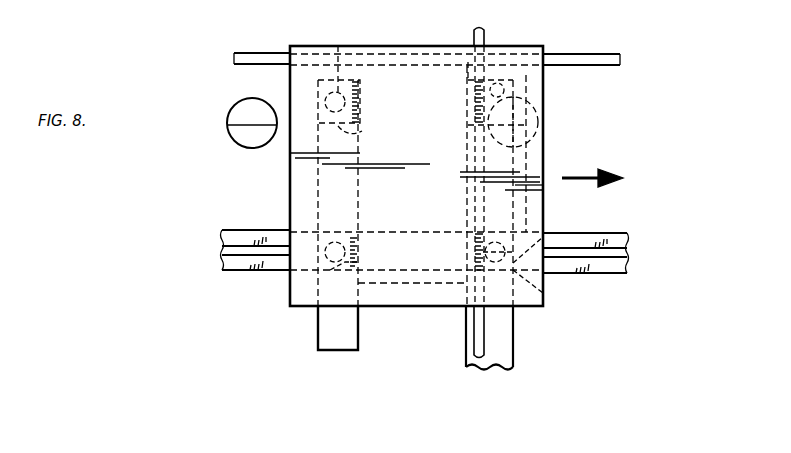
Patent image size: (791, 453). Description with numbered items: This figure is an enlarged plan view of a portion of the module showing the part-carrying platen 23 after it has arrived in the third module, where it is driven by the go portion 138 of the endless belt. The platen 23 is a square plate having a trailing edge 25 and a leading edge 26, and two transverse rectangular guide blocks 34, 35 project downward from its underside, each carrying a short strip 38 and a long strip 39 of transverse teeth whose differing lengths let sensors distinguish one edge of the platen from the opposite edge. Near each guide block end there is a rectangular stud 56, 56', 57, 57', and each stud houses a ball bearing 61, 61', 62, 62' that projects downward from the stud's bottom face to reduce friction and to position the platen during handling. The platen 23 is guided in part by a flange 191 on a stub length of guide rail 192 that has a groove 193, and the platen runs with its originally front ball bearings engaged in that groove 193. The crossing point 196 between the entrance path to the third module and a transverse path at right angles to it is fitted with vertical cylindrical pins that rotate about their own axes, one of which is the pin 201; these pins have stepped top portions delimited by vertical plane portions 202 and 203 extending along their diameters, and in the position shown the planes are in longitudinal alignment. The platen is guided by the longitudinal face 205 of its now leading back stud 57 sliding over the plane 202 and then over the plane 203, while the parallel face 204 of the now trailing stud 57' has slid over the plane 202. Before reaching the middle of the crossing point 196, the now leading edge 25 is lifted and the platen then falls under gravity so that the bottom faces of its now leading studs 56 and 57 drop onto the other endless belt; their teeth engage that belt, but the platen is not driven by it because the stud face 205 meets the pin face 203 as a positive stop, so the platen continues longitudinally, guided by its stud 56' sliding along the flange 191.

The part-carrying platen 23 is at (424, 97).
The trailing edge 25 is at (543, 88).
The leading edge 26 is at (290, 176).
The guide block 34 is at (522, 190).
The guide block 35 is at (348, 182).
The short strip 38 is at (482, 273).
The long strip 39 is at (490, 100).
The rectangular stud 56 is at (544, 289).
The rectangular stud 56' is at (305, 281).
The rectangular stud 57 is at (520, 76).
The rectangular stud 57' is at (339, 66).
The ball bearing 61 is at (524, 241).
The ball bearing 61' is at (305, 234).
The ball bearing 62 is at (507, 59).
The ball bearing 62' is at (305, 61).
The go portion 138 is at (597, 55).
The flange 191 is at (409, 283).
The stub length of guide rail 192 is at (222, 268).
The groove 193 is at (246, 256).
The crossing point 196 is at (428, 156).
The vertical cylindrical pin 201 is at (546, 144).
The vertical plane portion 202 is at (242, 122).
The vertical plane portion 203 is at (548, 116).
The parallel face 204 is at (363, 132).
The longitudinal face 205 is at (470, 174).